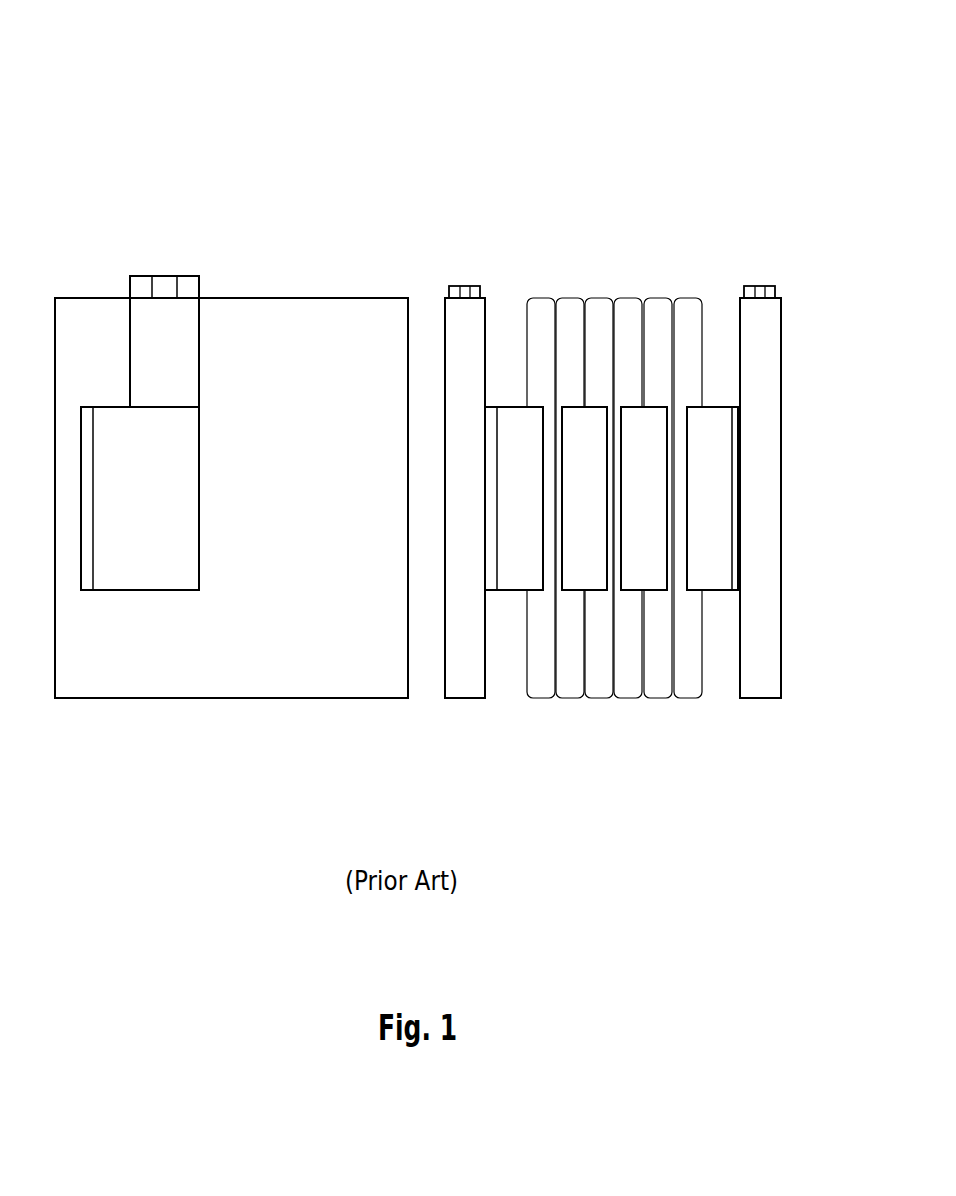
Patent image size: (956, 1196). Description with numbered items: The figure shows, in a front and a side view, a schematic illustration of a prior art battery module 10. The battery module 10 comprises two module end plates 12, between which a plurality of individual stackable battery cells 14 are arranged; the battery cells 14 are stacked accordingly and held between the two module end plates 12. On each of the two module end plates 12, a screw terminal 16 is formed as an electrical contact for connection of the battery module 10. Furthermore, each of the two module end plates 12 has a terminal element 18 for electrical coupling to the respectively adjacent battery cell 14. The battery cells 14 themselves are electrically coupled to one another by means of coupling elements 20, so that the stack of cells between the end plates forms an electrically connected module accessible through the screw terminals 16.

The battery module 10 is at (521, 96).
The module end plate 12 is at (287, 318).
The battery cell 14 is at (540, 305).
The screw terminal 16 is at (165, 287).
The terminal element 18 is at (108, 425).
The coupling element 20 is at (588, 572).